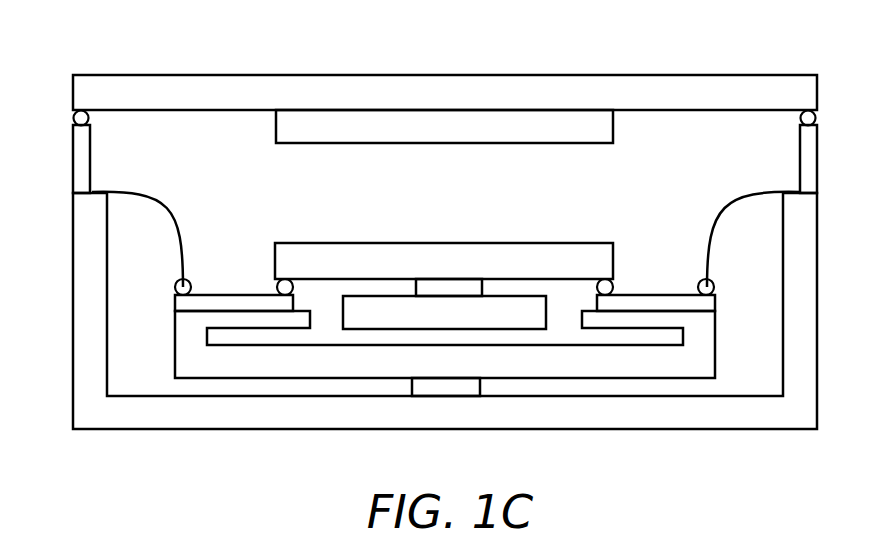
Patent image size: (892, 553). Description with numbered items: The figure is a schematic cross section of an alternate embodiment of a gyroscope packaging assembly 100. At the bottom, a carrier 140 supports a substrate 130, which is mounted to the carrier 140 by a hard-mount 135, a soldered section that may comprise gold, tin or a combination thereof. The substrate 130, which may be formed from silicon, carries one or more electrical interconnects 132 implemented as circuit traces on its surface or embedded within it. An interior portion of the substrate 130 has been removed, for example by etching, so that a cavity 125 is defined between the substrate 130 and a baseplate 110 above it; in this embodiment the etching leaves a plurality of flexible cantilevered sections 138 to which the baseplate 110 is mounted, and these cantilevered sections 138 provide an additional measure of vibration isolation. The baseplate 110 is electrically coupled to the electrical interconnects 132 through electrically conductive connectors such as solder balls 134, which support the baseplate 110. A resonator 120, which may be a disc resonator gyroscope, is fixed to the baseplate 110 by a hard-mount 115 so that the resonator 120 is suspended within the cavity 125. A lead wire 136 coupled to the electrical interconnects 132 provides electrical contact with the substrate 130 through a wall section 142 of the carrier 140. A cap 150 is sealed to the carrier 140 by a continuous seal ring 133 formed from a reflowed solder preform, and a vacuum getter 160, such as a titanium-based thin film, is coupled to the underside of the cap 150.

The gyroscope packaging assembly 100 is at (107, 50).
The baseplate 110 is at (501, 271).
The hard-mount 115 is at (439, 296).
The resonator 120 is at (503, 322).
The cavity 125 is at (557, 285).
The substrate 130 is at (532, 369).
The electrical interconnects 132 is at (222, 310).
The continuous seal ring 133 is at (87, 123).
The solder balls 134 is at (275, 320).
The hard-mount 135 is at (437, 394).
The lead wire 136 is at (173, 214).
The flexible cantilevered sections 138 is at (279, 283).
The carrier 140 is at (399, 422).
The wall section 142 is at (90, 160).
The cap 150 is at (478, 102).
The vacuum getter 160 is at (487, 136).